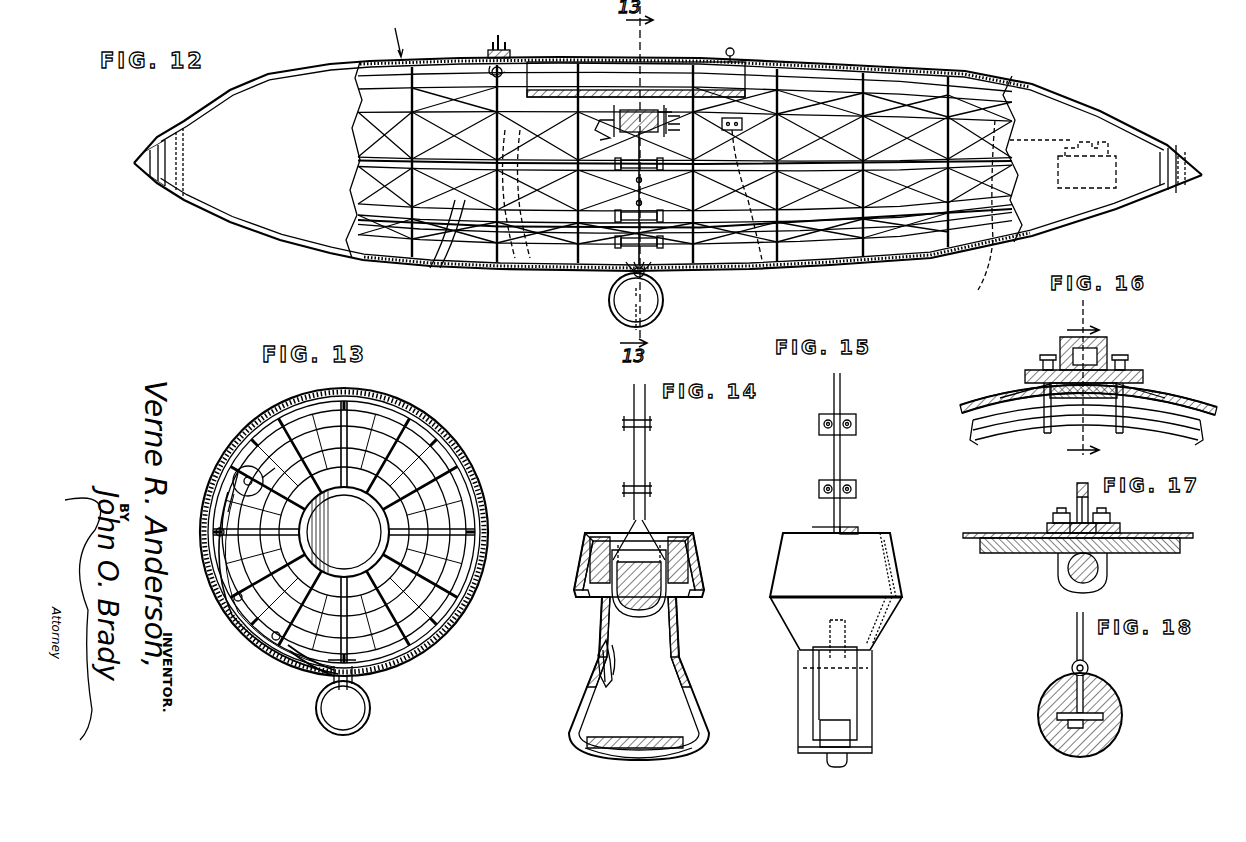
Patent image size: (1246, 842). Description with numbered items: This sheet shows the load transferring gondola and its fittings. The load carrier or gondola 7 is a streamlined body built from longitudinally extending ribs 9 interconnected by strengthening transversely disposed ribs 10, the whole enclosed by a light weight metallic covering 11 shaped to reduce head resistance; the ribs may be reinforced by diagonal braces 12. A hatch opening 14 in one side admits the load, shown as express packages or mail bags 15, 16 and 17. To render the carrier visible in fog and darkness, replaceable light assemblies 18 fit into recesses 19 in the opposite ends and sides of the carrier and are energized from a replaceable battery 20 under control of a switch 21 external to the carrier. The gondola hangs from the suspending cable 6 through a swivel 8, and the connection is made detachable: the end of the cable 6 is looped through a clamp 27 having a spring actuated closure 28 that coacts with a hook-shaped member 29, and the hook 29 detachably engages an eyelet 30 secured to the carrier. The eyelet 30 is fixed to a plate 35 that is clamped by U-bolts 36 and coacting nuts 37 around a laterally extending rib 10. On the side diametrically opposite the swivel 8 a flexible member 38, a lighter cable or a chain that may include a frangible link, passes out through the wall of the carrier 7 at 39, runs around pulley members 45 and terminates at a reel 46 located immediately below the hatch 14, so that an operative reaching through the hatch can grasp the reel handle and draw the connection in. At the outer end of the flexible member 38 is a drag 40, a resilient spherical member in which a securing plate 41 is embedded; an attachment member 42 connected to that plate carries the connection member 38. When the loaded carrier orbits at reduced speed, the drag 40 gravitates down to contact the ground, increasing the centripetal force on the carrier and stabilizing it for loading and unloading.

In FIG. 14, the cable 6 is at (648, 453).
In FIG. 15, the cable 6 is at (845, 396).
In FIG. 12, the load carrier or gondola 7 is at (393, 38).
In FIG. 14, the swivel 8 is at (680, 503).
In FIG. 15, the swivel 8 is at (878, 506).
In FIG. 12, the longitudinally extending ribs 9 is at (800, 98).
In FIG. 13, the longitudinally extending ribs 9 is at (462, 560).
In FIG. 12, the transversely disposed ribs 10 is at (452, 62).
In FIG. 13, the transversely disposed ribs 10 is at (425, 645).
In FIG. 16, the transversely disposed ribs 10 is at (1005, 438).
In FIG. 17, the transversely disposed ribs 10 is at (1062, 576).
In FIG. 12, the metallic covering 11 is at (381, 272).
In FIG. 13, the metallic covering 11 is at (458, 618).
In FIG. 16, the metallic covering 11 is at (1160, 425).
In FIG. 17, the metallic covering 11 is at (1172, 533).
In FIG. 12, the diagonal braces 12 is at (441, 272).
In FIG. 12, the hatch opening 14 is at (742, 84).
In FIG. 13, the hatch opening 14 is at (400, 410).
In FIG. 12, the express package or mail bag 15 is at (354, 114).
In FIG. 12, the express package or mail bag 16 is at (526, 268).
In FIG. 12, the express package or mail bag 17 is at (980, 212).
In FIG. 16, the express package or mail bag 17 is at (1075, 389).
In FIG. 12, the replaceable light assemblies 18 is at (152, 166).
In FIG. 12, the recesses 19 is at (178, 192).
In FIG. 12, the replaceable battery 20 is at (1105, 165).
In FIG. 12, the switch 21 is at (726, 118).
In FIG. 14, the clamp 27 is at (660, 568).
In FIG. 15, the clamp 27 is at (850, 538).
In FIG. 14, the spring actuated closure 28 is at (600, 672).
In FIG. 15, the spring actuated closure 28 is at (858, 700).
In FIG. 14, the hook-shaped member 29 is at (640, 740).
In FIG. 15, the hook-shaped member 29 is at (872, 748).
In FIG. 12, the eyelet 30 is at (500, 48).
In FIG. 16, the eyelet 30 is at (1108, 346).
In FIG. 17, the eyelet 30 is at (1076, 490).
In FIG. 16, the plate 35 is at (1028, 372).
In FIG. 17, the plate 35 is at (1047, 528).
In FIG. 16, the U-bolts 36 is at (1000, 398).
In FIG. 17, the U-bolts 36 is at (1107, 582).
In FIG. 16, the nuts 37 is at (1042, 360).
In FIG. 17, the nuts 37 is at (1108, 520).
In FIG. 12, the flexible member 38 is at (646, 138).
In FIG. 13, the flexible member 38 is at (222, 566).
In FIG. 18, the flexible member 38 is at (1075, 652).
In FIG. 12, the side passage of the load carrier 39 is at (630, 274).
In FIG. 13, the side passage of the load carrier 39 is at (356, 686).
In FIG. 12, the drag 40 is at (664, 303).
In FIG. 13, the drag 40 is at (369, 720).
In FIG. 18, the drag 40 is at (1080, 756).
In FIG. 18, the securing plate 41 is at (1103, 716).
In FIG. 18, the attachment member 42 is at (1090, 690).
In FIG. 12, the pulley members 45 is at (623, 216).
In FIG. 13, the pulley members 45 is at (298, 660).
In FIG. 12, the reel 46 is at (643, 110).
In FIG. 13, the reel 46 is at (238, 470).